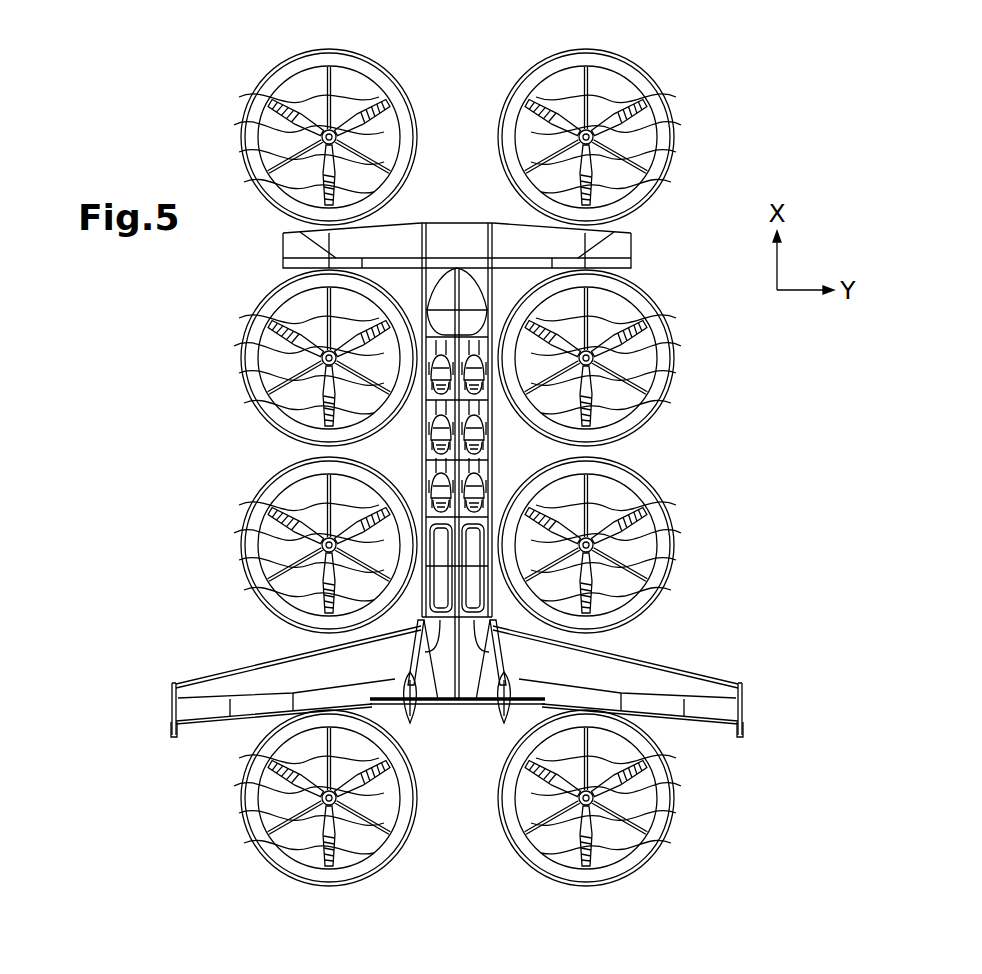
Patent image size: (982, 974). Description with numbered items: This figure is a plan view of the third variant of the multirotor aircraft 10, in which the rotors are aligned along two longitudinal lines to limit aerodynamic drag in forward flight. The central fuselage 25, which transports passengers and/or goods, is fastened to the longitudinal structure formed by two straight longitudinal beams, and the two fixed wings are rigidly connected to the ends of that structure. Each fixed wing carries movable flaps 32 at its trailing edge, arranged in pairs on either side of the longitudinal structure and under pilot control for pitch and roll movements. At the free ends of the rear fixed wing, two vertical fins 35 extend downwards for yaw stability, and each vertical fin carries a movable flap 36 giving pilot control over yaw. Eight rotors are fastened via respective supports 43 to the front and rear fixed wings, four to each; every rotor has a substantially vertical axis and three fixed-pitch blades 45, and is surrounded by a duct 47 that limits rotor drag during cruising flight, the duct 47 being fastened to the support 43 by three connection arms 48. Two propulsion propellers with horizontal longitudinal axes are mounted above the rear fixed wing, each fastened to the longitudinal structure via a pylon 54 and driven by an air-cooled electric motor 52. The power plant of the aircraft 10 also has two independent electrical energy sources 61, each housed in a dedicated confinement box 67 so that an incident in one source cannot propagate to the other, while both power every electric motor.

The multirotor aircraft 10 is at (106, 820).
The fuselage 25 is at (474, 300).
The movable flaps 32 is at (300, 244).
The vertical fins 35 is at (170, 700).
The movable flap 36 is at (170, 734).
The supports 43 is at (285, 276).
The fixed-pitch blades 45 is at (242, 124).
The duct 47 is at (527, 78).
The connection arms 48 is at (322, 90).
The electric motor 52 is at (450, 706).
The pylon 54 is at (404, 688).
The electrical energy source 61 is at (432, 528).
The confinement boxes 67 is at (418, 645).